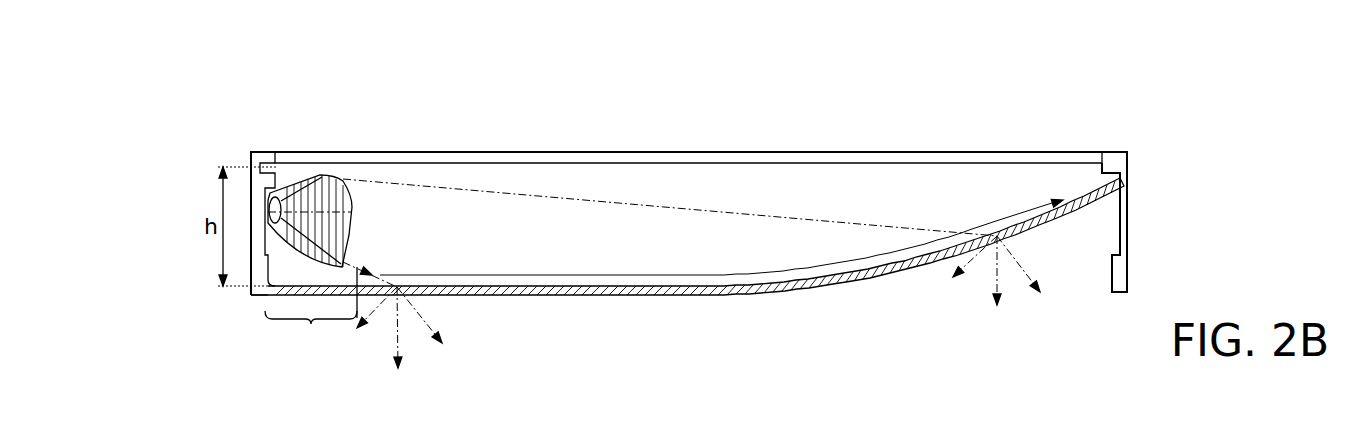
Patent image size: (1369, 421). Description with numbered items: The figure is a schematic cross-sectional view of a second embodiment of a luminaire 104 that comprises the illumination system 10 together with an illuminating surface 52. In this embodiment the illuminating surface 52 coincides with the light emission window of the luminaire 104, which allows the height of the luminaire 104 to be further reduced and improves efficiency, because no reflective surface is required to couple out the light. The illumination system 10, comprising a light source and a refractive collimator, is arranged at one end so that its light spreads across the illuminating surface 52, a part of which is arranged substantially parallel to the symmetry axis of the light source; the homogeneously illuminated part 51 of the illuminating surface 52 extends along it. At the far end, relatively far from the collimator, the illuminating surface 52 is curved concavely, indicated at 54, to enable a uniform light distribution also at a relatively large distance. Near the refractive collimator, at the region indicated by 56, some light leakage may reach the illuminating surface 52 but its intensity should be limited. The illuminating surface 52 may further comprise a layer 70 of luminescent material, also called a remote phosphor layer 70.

The luminaire 104 is at (1013, 86).
The illumination system 10 is at (340, 180).
The homogeneously illuminated part of the illuminating surface 51 is at (721, 238).
The illuminating surface 52 is at (686, 286).
The concavely curved far end of the illuminating surface 54 is at (870, 277).
The region of the illuminating surface near the refractive collimator 56 is at (311, 310).
The luminescent layer 70 is at (580, 297).